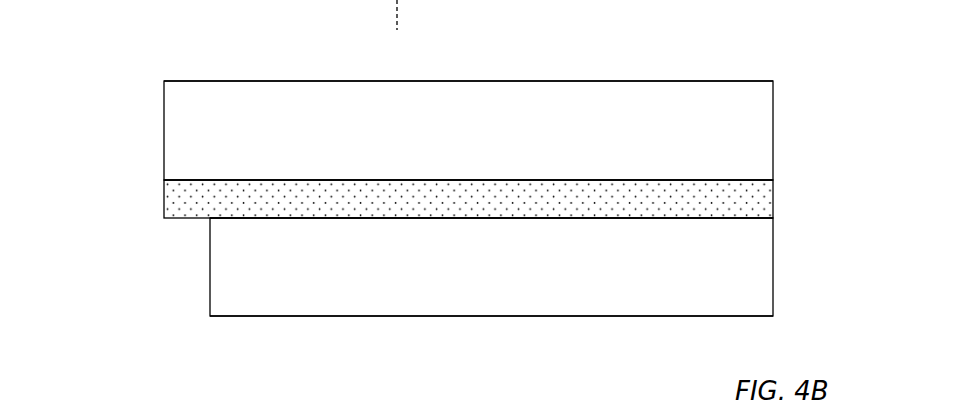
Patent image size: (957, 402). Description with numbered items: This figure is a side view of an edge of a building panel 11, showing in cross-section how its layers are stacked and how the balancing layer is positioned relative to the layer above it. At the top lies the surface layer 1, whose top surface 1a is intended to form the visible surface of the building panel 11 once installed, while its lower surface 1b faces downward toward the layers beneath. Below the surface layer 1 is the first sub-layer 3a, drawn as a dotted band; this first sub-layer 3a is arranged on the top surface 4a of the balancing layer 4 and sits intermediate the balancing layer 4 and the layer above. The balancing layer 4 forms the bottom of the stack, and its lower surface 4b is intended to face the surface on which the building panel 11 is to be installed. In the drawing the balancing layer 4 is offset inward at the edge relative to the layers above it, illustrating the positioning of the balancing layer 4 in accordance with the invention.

The surface layer 1 is at (440, 211).
The top surface of the surface layer 1a is at (163, 81).
The lower surface of the surface layer 1b is at (200, 179).
The first sub-layer 3a is at (770, 200).
The balancing layer 4 is at (460, 298).
The top surface of the balancing layer 4a is at (210, 221).
The lower surface of the balancing layer 4b is at (240, 318).
The building panel 11 is at (456, 201).